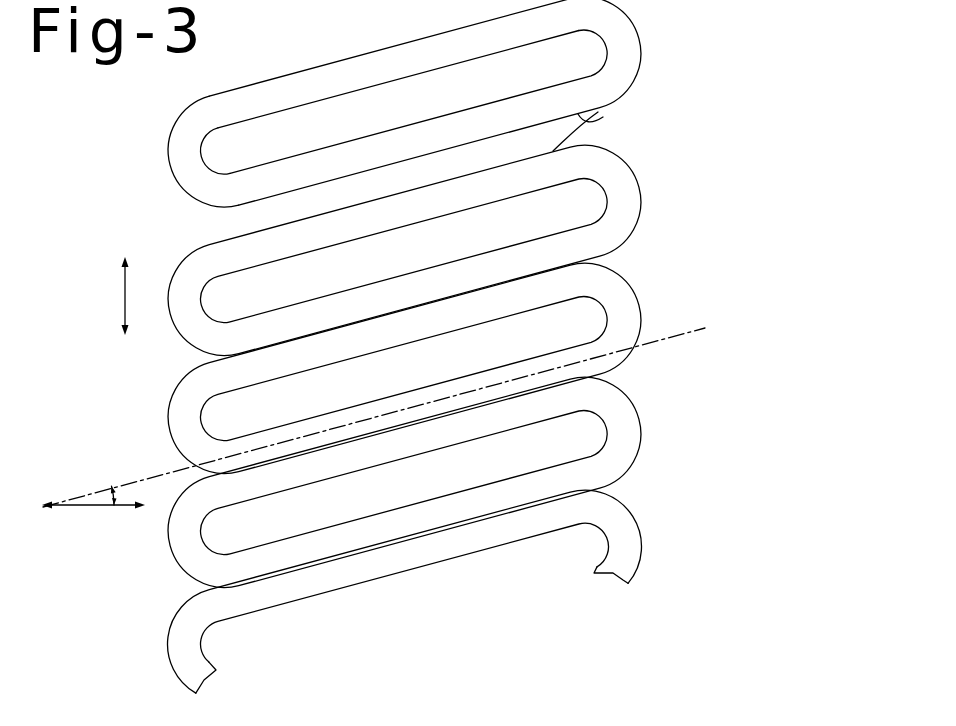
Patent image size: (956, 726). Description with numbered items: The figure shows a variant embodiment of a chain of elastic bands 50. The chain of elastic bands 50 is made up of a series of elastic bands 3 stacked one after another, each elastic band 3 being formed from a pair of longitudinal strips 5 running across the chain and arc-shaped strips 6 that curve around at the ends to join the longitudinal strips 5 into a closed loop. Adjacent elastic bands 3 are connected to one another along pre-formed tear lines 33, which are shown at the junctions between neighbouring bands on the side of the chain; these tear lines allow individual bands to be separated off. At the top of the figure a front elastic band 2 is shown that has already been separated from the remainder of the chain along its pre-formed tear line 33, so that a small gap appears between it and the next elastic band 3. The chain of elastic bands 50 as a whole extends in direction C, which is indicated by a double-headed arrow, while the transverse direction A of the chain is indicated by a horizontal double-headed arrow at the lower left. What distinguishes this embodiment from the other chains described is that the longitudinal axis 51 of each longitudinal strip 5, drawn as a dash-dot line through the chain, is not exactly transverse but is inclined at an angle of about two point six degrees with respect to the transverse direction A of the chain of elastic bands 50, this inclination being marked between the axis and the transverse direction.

The front elastic band 2 is at (409, 103).
The elastic band 3 is at (666, 199).
The longitudinal strip 5 is at (365, 70).
The arc-shaped strip 6 is at (177, 157).
The pre-formed tear line 33 is at (592, 124).
The chain of elastic bands 50 is at (426, 346).
The longitudinal axis 51 is at (660, 336).
The direction of extension of the chain C is at (122, 300).
The transverse direction A is at (77, 507).